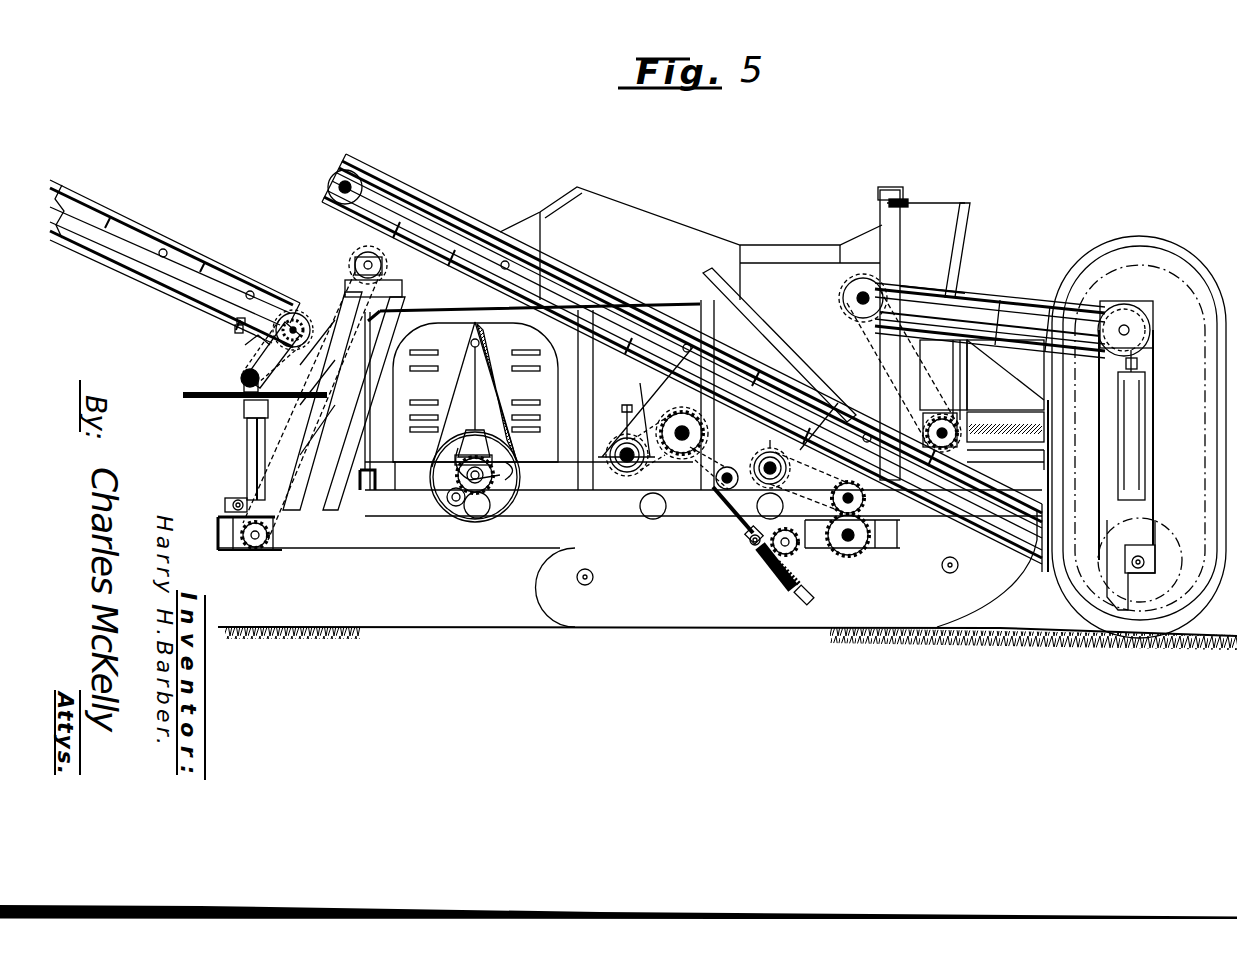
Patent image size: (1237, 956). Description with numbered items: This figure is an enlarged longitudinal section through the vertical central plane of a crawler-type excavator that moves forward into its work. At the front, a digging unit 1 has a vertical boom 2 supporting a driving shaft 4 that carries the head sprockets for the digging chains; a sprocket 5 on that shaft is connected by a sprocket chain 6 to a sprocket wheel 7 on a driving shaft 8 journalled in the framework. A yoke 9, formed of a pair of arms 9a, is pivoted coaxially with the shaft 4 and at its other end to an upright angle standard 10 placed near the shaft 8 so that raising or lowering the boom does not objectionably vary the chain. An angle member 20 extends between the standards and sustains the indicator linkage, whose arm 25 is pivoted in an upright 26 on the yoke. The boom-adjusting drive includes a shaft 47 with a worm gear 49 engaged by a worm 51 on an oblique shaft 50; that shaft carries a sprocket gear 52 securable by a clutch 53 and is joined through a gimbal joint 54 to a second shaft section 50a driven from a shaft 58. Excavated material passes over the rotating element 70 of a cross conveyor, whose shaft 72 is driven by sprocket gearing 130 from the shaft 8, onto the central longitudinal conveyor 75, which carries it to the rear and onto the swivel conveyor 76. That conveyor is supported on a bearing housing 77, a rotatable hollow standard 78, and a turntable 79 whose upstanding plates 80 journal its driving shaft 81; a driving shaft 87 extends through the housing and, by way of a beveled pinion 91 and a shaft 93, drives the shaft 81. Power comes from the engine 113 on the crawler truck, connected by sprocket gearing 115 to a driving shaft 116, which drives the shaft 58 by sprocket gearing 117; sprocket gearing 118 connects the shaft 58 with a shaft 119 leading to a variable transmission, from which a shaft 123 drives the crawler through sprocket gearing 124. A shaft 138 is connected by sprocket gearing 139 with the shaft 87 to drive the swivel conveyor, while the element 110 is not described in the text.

The digging unit 1 is at (1150, 275).
The vertical boom 2 is at (1180, 368).
The driving shaft 4 is at (1123, 320).
The sprocket 5 is at (1185, 282).
The sprocket chain 6 is at (990, 290).
The sprocket wheel 7 is at (855, 292).
The driving shaft 8 is at (848, 300).
The yoke 9 is at (915, 290).
The yoke arm 9a is at (1020, 305).
The upright angle standard 10 is at (890, 240).
The angle member 20 is at (898, 192).
The arm 25 is at (955, 205).
The upright 26 is at (958, 265).
The shaft 47 is at (798, 545).
The worm gear 49 is at (810, 550).
The oblique shaft 50 is at (760, 555).
The second shaft section 50a is at (720, 505).
The worm 51 is at (775, 575).
The sprocket gear 52 is at (790, 585).
The clutch 53 is at (800, 600).
The gimbal joint 54 is at (748, 540).
The shaft 58 is at (678, 413).
The rotating element 70 is at (1000, 428).
The shaft 72 is at (938, 418).
The central longitudinal conveyor 75 is at (608, 280).
The swivel conveyor 76 is at (150, 245).
The bearing housing 77 is at (245, 545).
The hollow standard 78 is at (247, 458).
The turntable 79 is at (230, 397).
The upstanding plate 80 is at (268, 345).
The driving shaft 81 is at (293, 325).
The driving shaft 87 is at (260, 548).
The beveled pinion 91 is at (273, 343).
The shaft 93 is at (240, 378).
The pendulum hanger 110 is at (440, 482).
The engine 113 is at (400, 400).
The sprocket gearing 115 is at (498, 515).
The driving shaft 116 is at (610, 470).
The sprocket gearing 117 is at (690, 468).
The sprocket gearing 118 is at (752, 460).
The shaft 119 is at (668, 507).
The shaft 123 is at (805, 470).
The sprocket gearing 124 is at (840, 402).
The sprocket gearing 130 is at (870, 350).
The shaft 138 is at (372, 262).
The sprocket gearing 139 is at (322, 360).